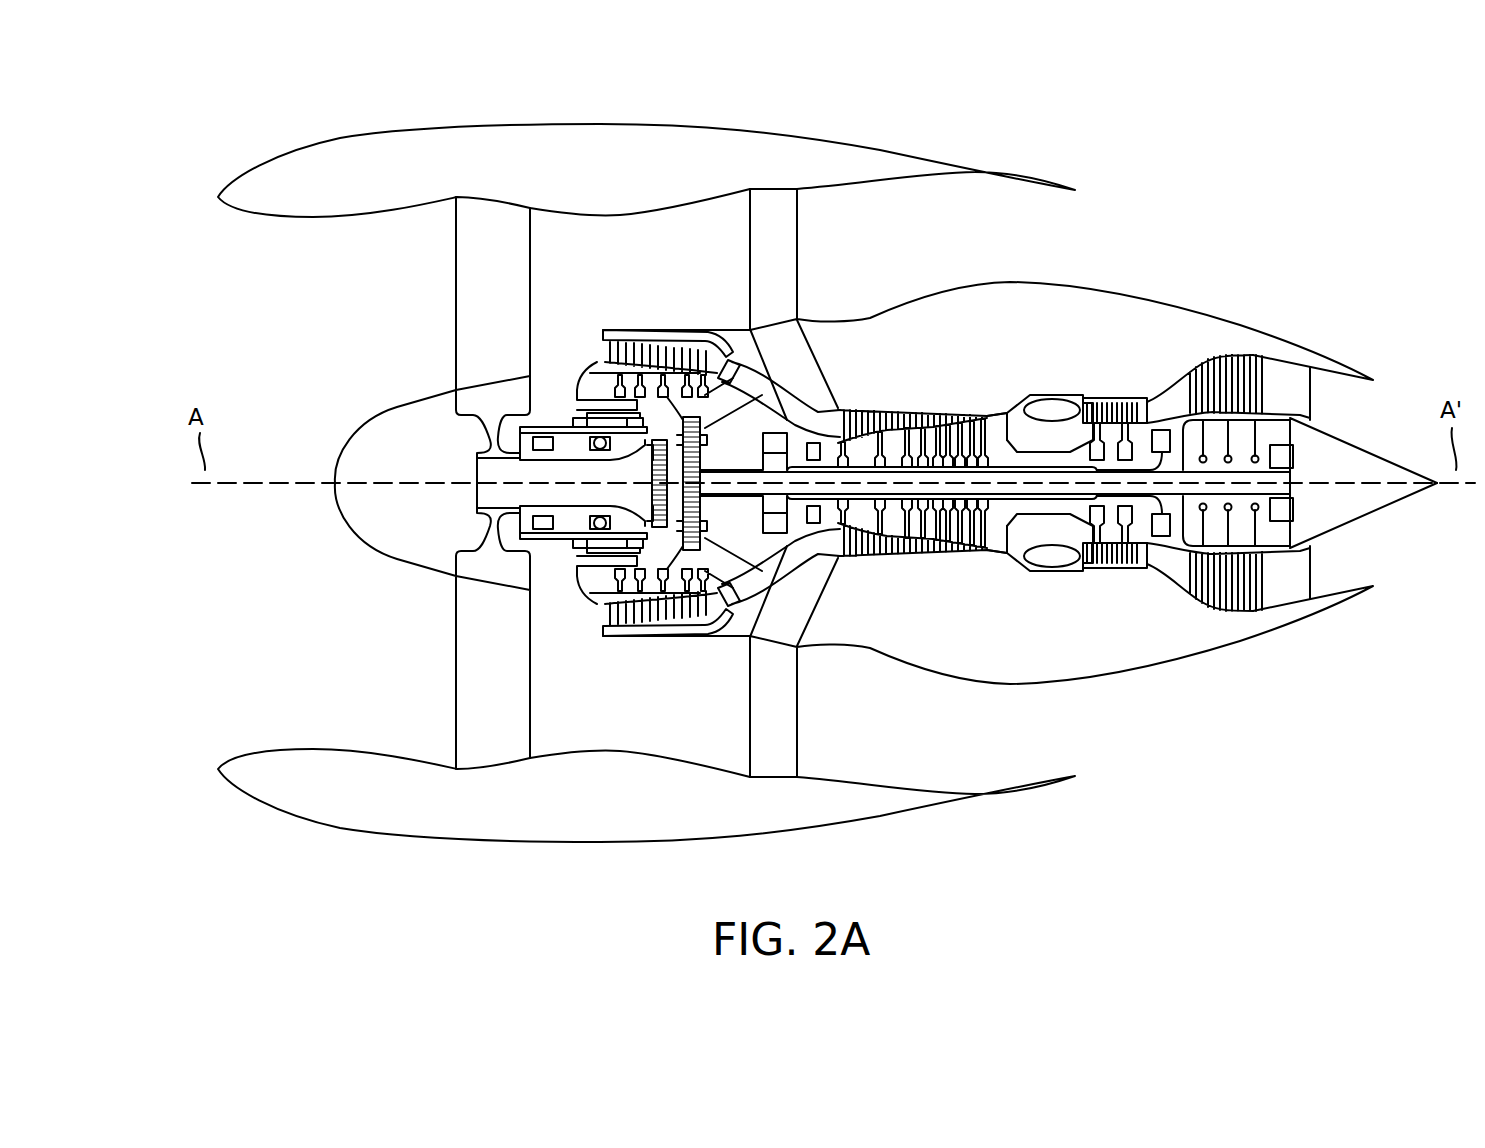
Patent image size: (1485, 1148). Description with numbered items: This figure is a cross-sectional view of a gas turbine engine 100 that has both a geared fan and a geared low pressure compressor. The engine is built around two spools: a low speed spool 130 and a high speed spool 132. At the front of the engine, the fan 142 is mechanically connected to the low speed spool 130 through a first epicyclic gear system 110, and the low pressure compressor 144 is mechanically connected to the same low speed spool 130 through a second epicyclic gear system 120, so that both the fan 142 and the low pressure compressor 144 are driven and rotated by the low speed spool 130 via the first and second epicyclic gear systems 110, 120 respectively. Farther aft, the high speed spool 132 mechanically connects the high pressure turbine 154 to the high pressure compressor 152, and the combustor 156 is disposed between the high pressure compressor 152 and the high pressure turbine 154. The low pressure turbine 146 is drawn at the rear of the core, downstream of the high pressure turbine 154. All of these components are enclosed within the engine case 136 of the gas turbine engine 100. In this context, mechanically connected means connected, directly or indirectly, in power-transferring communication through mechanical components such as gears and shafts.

The gas turbine engine 100 is at (767, 446).
The first epicyclic gear system 110 is at (641, 494).
The second epicyclic gear system 120 is at (745, 600).
The low speed spool 130 is at (704, 504).
The high speed spool 132 is at (1010, 555).
The engine case 136 is at (652, 147).
The fan 142 is at (478, 340).
The low pressure compressor 144 is at (661, 340).
The low pressure turbine 146 is at (1224, 345).
The high pressure compressor 152 is at (923, 363).
The high pressure turbine 154 is at (1106, 393).
The combustor 156 is at (1052, 363).